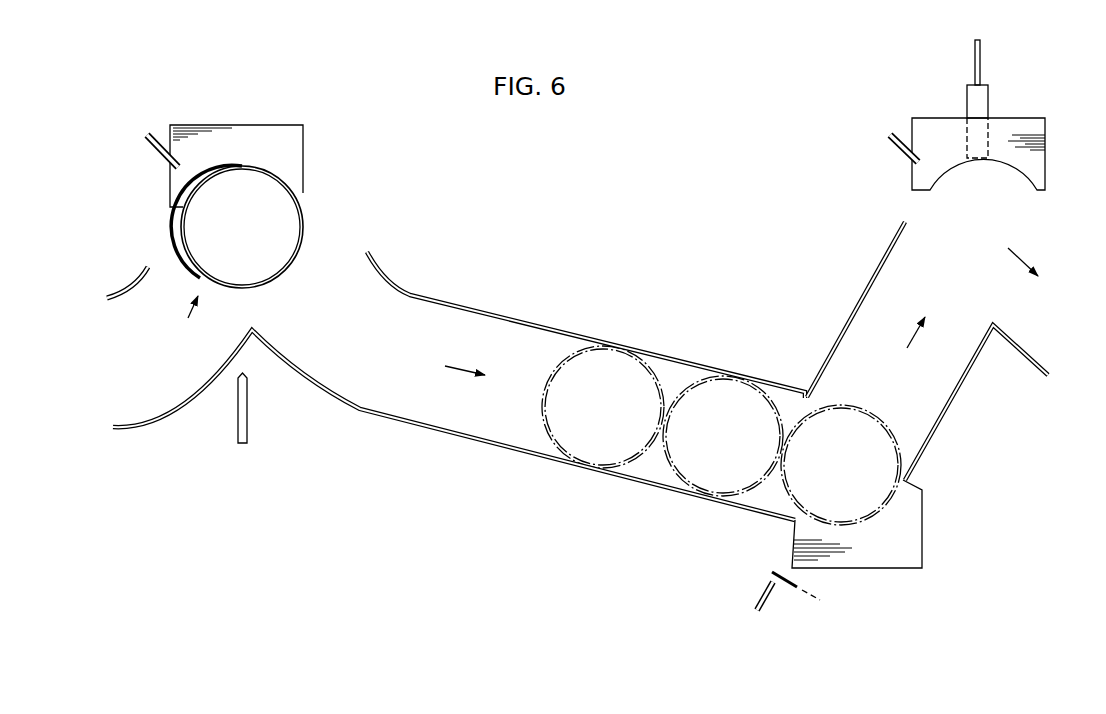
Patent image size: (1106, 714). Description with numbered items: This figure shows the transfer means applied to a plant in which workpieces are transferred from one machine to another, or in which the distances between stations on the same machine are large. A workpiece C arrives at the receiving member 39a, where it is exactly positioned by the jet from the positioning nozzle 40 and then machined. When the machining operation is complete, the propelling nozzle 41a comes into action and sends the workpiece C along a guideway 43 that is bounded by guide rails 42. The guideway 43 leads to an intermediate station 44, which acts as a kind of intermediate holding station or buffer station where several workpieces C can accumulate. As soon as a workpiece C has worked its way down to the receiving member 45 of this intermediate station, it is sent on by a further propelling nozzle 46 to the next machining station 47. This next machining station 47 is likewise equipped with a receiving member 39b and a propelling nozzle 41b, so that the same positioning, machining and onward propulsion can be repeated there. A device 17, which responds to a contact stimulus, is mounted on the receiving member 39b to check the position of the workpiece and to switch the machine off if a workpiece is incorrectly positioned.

The receiving member 39a is at (287, 135).
The propelling nozzle 41a is at (152, 150).
The workpiece C is at (302, 208).
The positioning nozzle 40 is at (238, 412).
The guide rails 42 is at (446, 302).
The guideway 43 is at (480, 317).
The intermediate station 44 is at (688, 506).
The receiving member 45 is at (912, 495).
The propelling nozzle 46 is at (770, 585).
The receiving member 39b is at (1008, 125).
The device 17 is at (973, 93).
The propelling nozzle 41b is at (902, 137).
The next machining station 47 is at (891, 163).